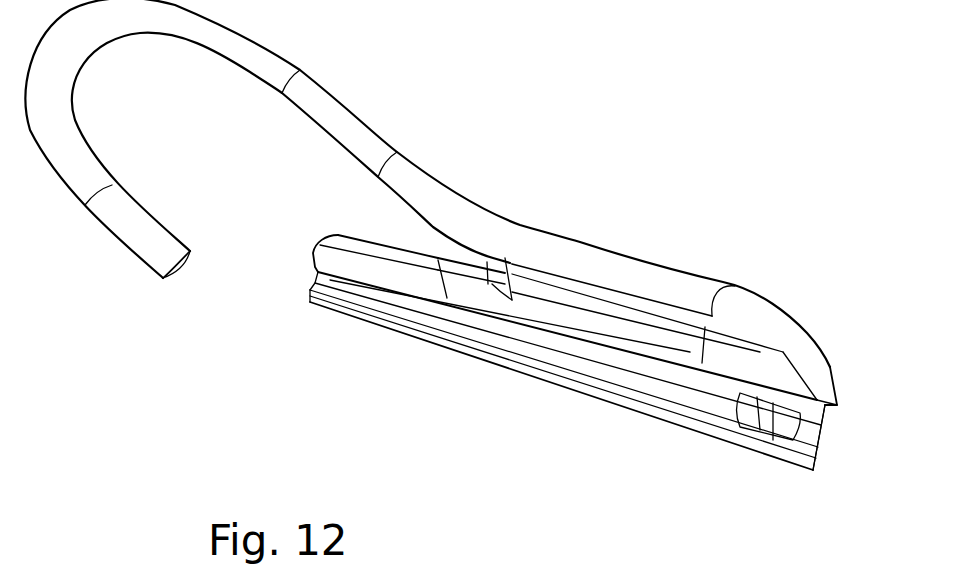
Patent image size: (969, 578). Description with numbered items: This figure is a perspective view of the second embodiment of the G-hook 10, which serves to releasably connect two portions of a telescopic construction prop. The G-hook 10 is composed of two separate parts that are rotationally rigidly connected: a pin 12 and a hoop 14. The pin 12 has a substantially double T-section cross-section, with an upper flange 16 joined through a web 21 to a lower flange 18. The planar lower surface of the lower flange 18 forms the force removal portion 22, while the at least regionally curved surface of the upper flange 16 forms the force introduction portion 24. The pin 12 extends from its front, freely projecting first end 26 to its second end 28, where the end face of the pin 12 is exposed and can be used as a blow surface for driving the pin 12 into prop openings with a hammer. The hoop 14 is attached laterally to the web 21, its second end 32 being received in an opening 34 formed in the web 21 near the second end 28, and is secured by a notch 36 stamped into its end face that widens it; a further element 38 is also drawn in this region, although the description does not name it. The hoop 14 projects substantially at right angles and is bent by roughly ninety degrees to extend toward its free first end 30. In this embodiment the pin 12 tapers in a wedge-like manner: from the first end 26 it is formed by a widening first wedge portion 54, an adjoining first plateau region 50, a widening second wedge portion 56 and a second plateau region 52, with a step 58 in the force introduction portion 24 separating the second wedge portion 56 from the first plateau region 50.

The G-hook 10 is at (263, 342).
The pin 12 is at (516, 365).
The hoop 14 is at (357, 140).
The upper flange 16 is at (388, 253).
The lower flange 18 is at (364, 307).
The web 21 is at (622, 370).
The force removal portion 22 is at (442, 332).
The force introduction portion 24 is at (430, 262).
The first end 26 is at (312, 252).
The second end 28 is at (827, 427).
The free first end 30 is at (180, 265).
The second end 32 is at (788, 437).
The opening 34 is at (838, 392).
The notch 36 is at (767, 420).
The claw 38 is at (747, 417).
The first plateau region 50 is at (487, 282).
The second plateau region 52 is at (757, 342).
The first wedge portion 54 is at (327, 240).
The second wedge portion 56 is at (613, 312).
The step 58 is at (520, 297).